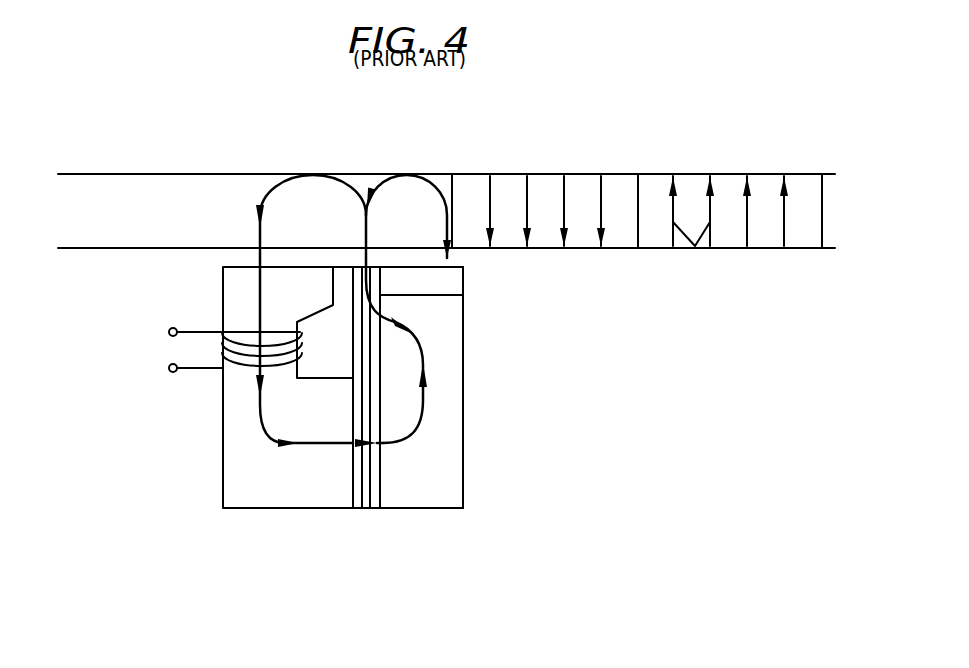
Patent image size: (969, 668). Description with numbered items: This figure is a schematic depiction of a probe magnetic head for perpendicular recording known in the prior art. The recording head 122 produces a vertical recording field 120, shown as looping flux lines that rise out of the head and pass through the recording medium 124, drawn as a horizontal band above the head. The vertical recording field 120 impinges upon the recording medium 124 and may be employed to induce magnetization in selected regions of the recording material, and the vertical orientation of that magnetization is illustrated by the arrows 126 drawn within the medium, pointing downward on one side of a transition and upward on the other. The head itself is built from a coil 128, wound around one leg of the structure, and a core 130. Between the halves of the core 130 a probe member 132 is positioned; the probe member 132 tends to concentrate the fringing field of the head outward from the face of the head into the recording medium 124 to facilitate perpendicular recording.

The vertical recording field 120 is at (373, 186).
The recording head 122 is at (450, 425).
The recording medium 124 is at (698, 173).
The arrows 126 is at (695, 249).
The coil 128 is at (195, 373).
The core 130 is at (463, 487).
The probe member 132 is at (367, 498).